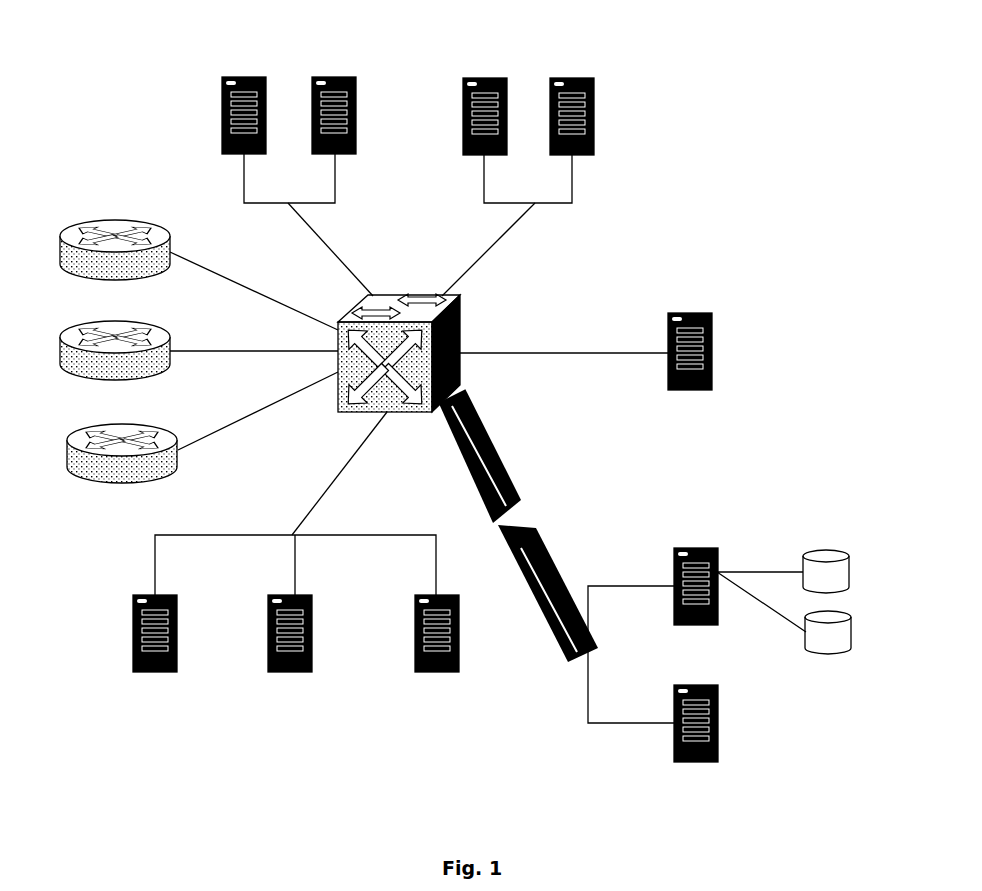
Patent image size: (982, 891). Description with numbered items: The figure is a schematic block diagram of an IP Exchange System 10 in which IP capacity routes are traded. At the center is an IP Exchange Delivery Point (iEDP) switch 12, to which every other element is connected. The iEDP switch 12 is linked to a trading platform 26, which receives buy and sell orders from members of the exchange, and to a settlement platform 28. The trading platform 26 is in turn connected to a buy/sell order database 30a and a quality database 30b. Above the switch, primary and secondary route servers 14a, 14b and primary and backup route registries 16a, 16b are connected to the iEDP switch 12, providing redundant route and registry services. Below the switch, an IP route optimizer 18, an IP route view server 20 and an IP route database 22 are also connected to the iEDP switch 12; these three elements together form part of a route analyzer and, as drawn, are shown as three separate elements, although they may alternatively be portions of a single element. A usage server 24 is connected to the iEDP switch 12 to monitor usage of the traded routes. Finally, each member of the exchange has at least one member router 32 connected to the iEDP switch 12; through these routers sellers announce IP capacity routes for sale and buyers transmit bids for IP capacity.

The IP Exchange System 10 is at (674, 238).
The IP Exchange Delivery Point (iEDP) switch 12 is at (462, 313).
The primary route server 14a is at (221, 100).
The secondary route server 14b is at (463, 96).
The primary route registry 16a is at (357, 100).
The backup route registry 16b is at (594, 95).
The IP route optimizer 18 is at (133, 620).
The IP route view server 20 is at (268, 620).
The IP route database 22 is at (415, 615).
The usage server 24 is at (713, 324).
The trading platform 26 is at (699, 549).
The settlement platform 28 is at (718, 723).
The buy/sell order database 30a is at (850, 565).
The quality database 30b is at (852, 634).
The member router 32 is at (70, 224).